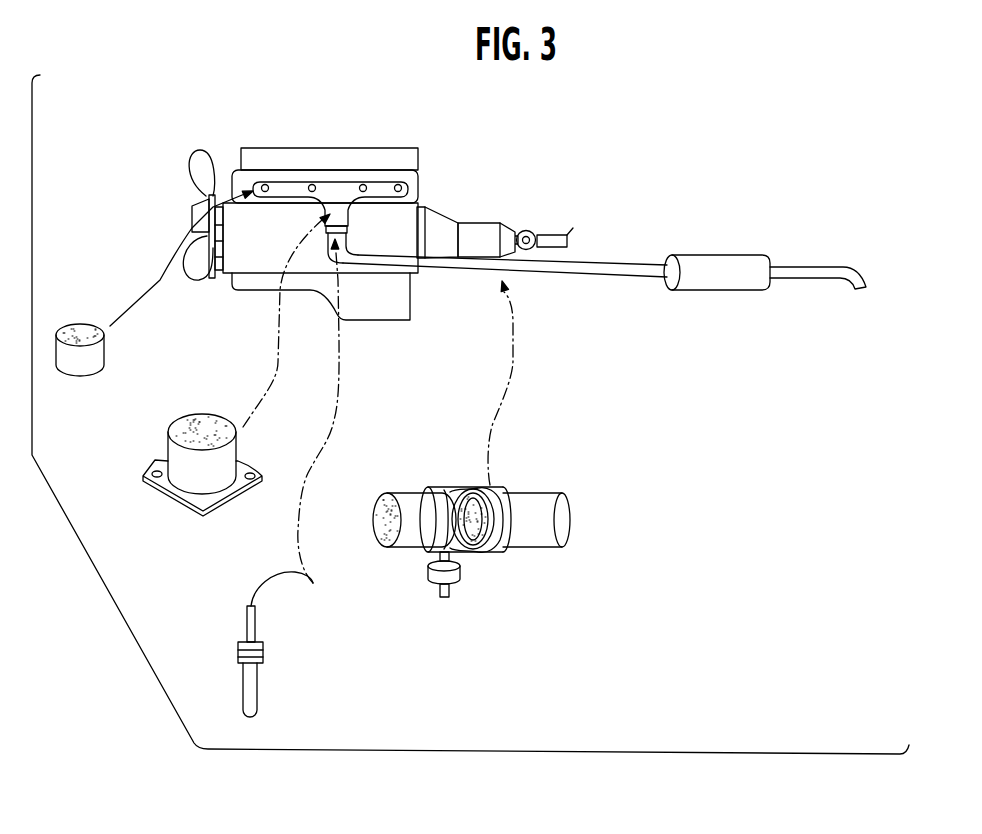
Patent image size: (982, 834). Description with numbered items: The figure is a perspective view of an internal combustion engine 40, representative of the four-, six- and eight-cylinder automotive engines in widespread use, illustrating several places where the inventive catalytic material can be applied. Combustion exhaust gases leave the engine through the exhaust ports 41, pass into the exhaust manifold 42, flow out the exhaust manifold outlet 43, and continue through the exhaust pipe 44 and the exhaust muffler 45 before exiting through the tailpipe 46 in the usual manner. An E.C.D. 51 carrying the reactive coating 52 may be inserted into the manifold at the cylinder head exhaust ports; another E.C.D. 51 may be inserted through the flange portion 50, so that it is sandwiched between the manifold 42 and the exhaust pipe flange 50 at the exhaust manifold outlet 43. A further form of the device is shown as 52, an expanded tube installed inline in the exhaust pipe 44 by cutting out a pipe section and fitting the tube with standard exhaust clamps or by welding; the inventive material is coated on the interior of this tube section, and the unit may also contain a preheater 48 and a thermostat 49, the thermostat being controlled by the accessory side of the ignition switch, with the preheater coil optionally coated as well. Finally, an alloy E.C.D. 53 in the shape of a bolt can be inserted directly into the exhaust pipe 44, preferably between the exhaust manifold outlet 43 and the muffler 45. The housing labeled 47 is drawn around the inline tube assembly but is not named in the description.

The internal combustion engine 40 is at (260, 150).
The exhaust ports 41 is at (308, 184).
The exhaust manifold 42 is at (340, 193).
The exhaust manifold outlet 43 is at (352, 222).
The exhaust pipe 44 is at (617, 262).
The exhaust muffler 45 is at (726, 256).
The tailpipe 46 is at (803, 268).
The filter housing 47 is at (538, 498).
The preheater 48 is at (473, 552).
The thermostat 49 is at (460, 578).
The exhaust pipe flange 50 is at (153, 488).
The E.C.D. 51 is at (95, 356).
The reactive coating 52 is at (73, 326).
The alloy E.C.D. 53 is at (253, 695).